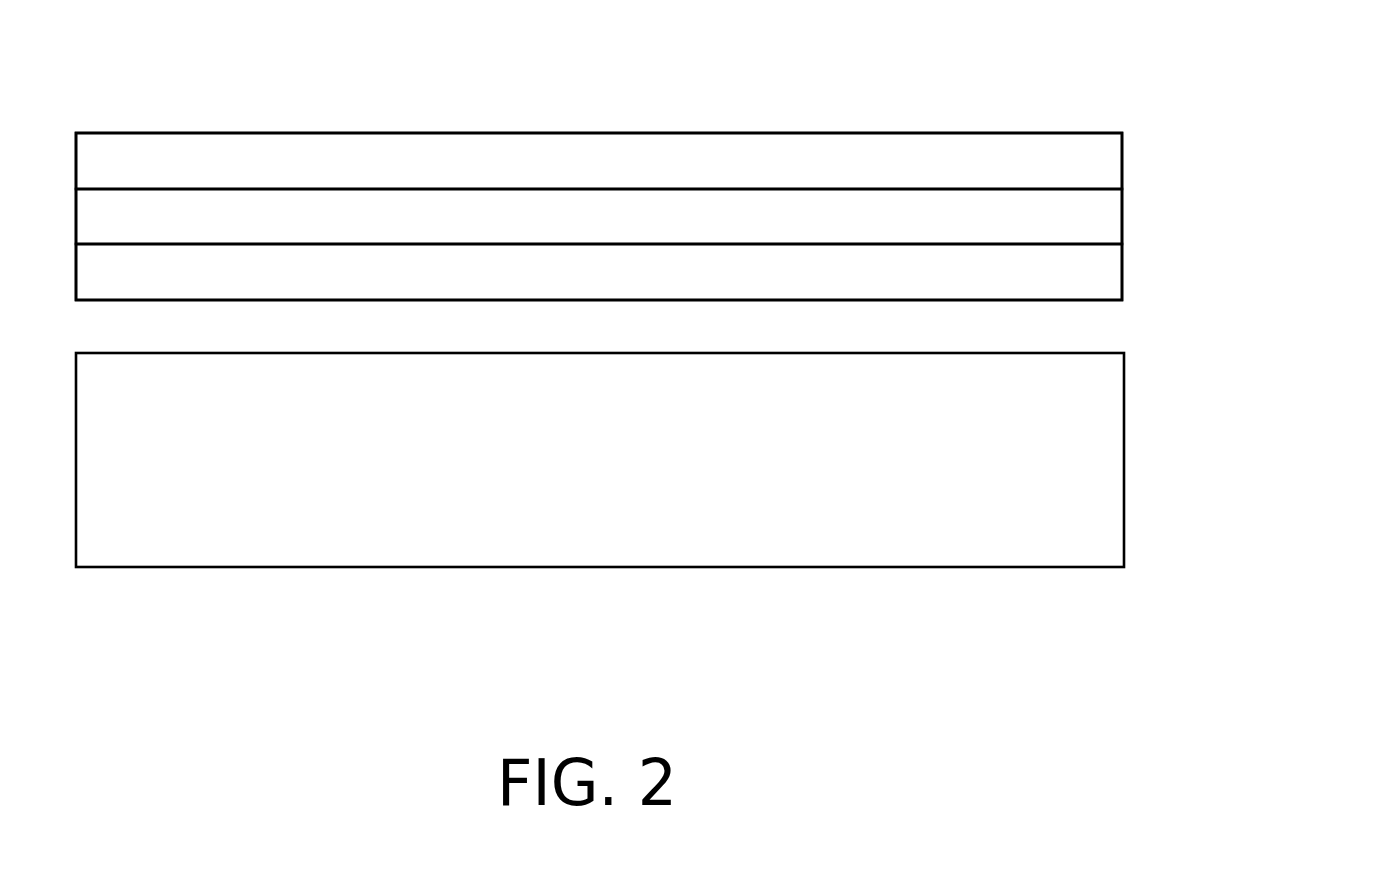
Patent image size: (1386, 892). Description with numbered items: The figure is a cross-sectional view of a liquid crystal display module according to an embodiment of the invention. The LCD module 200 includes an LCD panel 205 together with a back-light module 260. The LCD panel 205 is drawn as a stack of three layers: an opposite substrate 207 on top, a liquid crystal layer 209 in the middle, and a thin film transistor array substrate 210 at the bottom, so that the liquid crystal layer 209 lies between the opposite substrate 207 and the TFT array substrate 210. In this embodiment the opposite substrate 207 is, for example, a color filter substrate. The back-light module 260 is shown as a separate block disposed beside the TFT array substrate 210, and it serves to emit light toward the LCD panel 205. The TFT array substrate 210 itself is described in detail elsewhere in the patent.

The LCD module 200 is at (1102, 677).
The LCD panel 205 is at (723, 187).
The opposite substrate 207 is at (1103, 154).
The liquid crystal layer 209 is at (1103, 215).
The thin film transistor (TFT) array substrate 210 is at (678, 264).
The back-light module 260 is at (1092, 489).